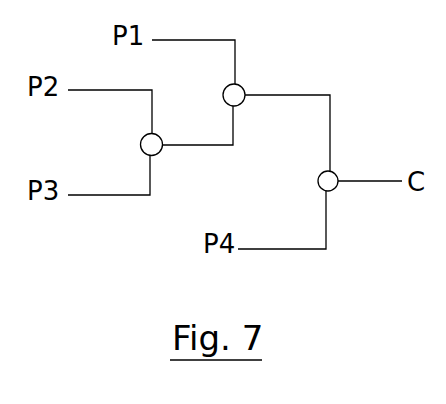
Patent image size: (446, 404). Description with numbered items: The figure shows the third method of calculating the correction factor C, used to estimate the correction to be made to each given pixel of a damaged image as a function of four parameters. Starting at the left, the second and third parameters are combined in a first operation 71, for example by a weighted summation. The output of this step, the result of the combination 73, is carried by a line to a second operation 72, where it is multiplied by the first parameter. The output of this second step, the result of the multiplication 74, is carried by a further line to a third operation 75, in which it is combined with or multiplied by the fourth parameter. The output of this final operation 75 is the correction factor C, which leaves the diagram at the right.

The combination of parameters P2 and P3 71 is at (150, 150).
The multiplication by the first parameter 72 is at (240, 88).
The result of the combination 73 is at (212, 150).
The result of the multiplication 74 is at (330, 136).
The combination with the fourth parameter 75 is at (333, 187).